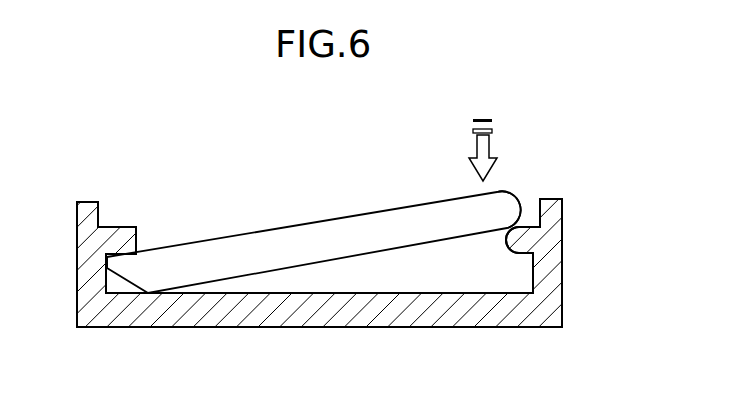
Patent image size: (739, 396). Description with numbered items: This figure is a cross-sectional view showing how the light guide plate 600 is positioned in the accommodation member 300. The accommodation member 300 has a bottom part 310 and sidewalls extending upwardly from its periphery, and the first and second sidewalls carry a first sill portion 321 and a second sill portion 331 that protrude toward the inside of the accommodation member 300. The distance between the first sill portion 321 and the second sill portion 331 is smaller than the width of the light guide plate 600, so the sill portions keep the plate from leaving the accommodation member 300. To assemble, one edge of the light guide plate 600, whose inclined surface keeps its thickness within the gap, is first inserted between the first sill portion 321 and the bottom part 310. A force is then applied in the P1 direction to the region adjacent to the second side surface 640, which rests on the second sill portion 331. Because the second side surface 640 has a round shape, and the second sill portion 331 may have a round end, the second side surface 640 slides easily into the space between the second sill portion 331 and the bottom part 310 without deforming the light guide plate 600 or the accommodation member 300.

The accommodation member 300 is at (223, 318).
The bottom part 310 is at (320, 328).
The first sill portion 321 is at (122, 232).
The second sill portion 331 is at (525, 233).
The light guide plate 600 is at (352, 243).
The second side surface 640 is at (108, 269).
The P1 direction P1 is at (484, 135).